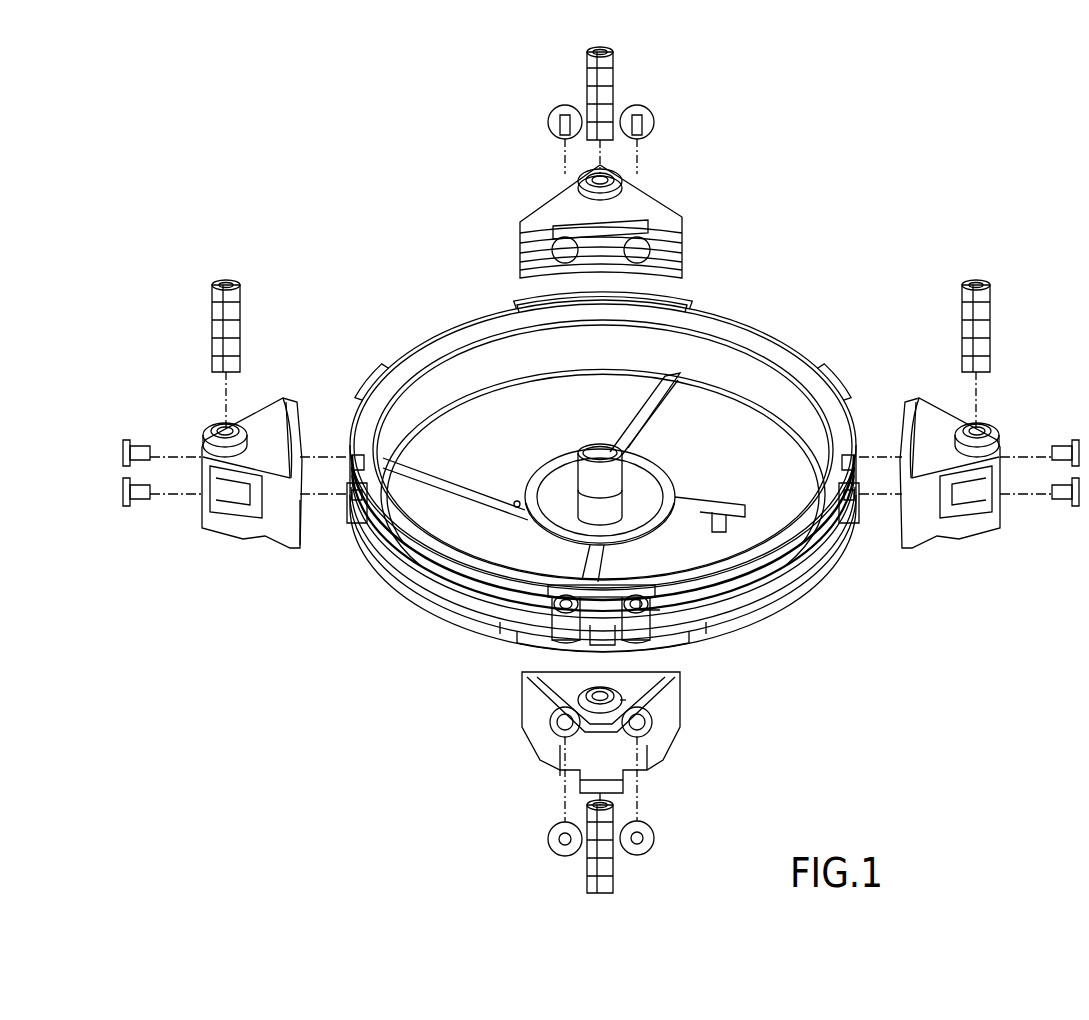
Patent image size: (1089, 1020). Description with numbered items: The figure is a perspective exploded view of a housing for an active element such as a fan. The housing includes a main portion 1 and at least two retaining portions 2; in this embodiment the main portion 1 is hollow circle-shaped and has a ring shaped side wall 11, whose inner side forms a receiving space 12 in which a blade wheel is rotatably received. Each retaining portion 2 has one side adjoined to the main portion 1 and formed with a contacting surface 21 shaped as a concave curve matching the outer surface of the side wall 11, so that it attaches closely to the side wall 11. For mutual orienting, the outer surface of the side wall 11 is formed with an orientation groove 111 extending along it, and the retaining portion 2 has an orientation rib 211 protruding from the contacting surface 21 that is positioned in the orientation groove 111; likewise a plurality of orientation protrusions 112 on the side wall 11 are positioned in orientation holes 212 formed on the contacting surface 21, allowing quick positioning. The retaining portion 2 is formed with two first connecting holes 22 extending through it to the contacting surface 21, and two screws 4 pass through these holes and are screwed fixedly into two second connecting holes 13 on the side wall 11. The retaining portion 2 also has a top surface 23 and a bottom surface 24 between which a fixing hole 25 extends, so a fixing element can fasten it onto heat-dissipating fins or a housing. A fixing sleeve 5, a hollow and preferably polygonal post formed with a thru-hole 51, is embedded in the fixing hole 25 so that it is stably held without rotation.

The main portion 1 is at (766, 324).
The side wall 11 is at (768, 592).
The orientation groove 111 is at (430, 557).
The orientation protrusions 112 is at (650, 602).
The receiving space 12 is at (735, 432).
The second connecting holes 13 is at (640, 612).
The retaining portion 2 is at (672, 188).
The contacting surface 21 is at (684, 222).
The orientation rib 211 is at (296, 522).
The orientation holes 212 is at (521, 241).
The first connecting holes 22 is at (640, 722).
The top surface 23 is at (560, 688).
The bottom surface 24 is at (560, 773).
The fixing hole 25 is at (662, 690).
The screws 4 is at (658, 842).
The fixing sleeve 5 is at (585, 866).
The thru-hole 51 is at (590, 804).